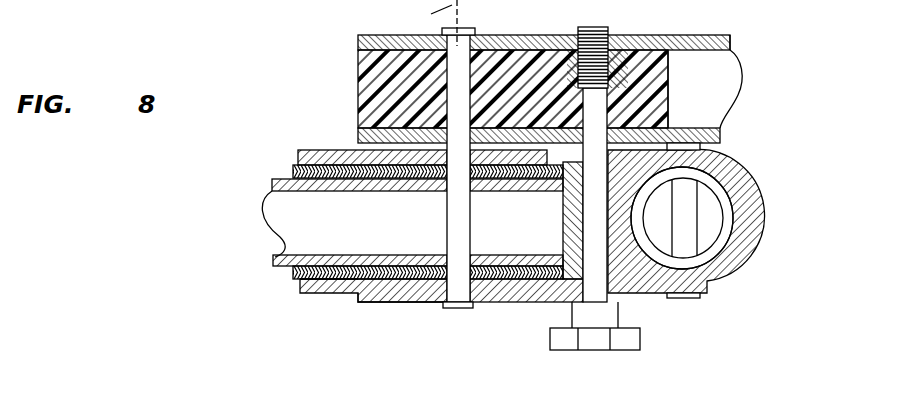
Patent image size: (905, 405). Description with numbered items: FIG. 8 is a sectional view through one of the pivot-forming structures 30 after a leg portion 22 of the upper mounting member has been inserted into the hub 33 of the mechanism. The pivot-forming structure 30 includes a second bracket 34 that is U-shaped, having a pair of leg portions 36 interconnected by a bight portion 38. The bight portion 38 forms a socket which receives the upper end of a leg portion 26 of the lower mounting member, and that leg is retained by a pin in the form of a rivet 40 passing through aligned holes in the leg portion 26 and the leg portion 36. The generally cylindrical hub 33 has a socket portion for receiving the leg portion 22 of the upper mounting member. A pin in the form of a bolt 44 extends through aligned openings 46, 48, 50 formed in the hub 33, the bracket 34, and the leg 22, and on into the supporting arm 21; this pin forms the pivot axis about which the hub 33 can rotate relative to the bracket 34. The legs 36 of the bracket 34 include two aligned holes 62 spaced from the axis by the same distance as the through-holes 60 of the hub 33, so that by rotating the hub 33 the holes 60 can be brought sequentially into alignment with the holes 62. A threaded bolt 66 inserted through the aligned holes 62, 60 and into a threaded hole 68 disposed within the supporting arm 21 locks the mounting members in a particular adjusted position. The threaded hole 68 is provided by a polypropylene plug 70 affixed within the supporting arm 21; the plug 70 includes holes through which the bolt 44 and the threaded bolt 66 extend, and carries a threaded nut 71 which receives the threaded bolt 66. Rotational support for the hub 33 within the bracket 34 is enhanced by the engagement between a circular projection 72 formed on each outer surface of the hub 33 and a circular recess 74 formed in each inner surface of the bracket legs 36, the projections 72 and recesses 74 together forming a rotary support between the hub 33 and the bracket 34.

The supporting arm 21 is at (725, 35).
The leg portion 22 is at (300, 256).
The leg portion 26 is at (722, 258).
The pivot-forming structure 30 is at (383, 310).
The hub 33 is at (290, 278).
The second bracket 34 is at (327, 300).
The leg portion 36 is at (320, 150).
The bight portion 38 is at (750, 243).
The rivet 40 is at (688, 212).
The bolt 44 is at (548, 35).
The opening 46 is at (450, 306).
The opening 48 is at (454, 309).
The opening 50 is at (469, 265).
The through-hole 60 is at (700, 155).
The aligned hole 62 is at (597, 293).
The threaded bolt 66 is at (592, 362).
The threaded hole 68 is at (600, 27).
The polypropylene plug 70 is at (668, 52).
The threaded nut 71 is at (643, 50).
The circular projection 72 is at (382, 110).
The circular recess 74 is at (384, 102).